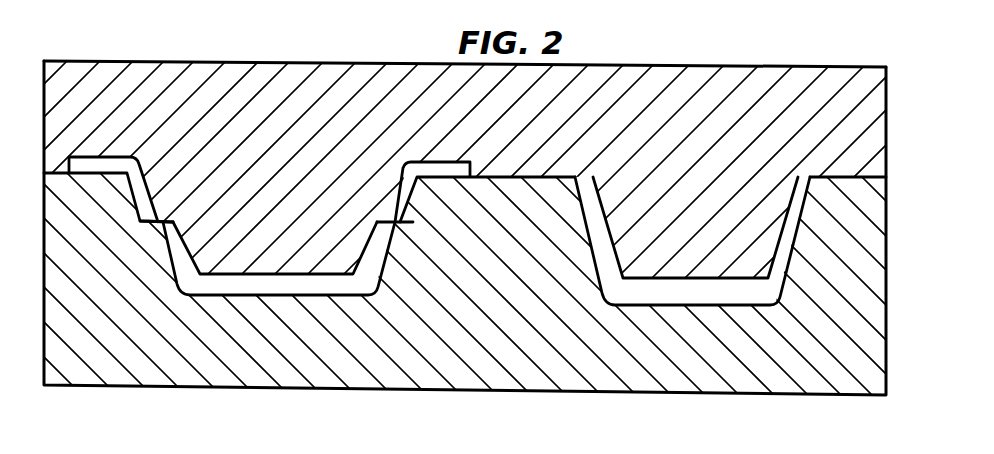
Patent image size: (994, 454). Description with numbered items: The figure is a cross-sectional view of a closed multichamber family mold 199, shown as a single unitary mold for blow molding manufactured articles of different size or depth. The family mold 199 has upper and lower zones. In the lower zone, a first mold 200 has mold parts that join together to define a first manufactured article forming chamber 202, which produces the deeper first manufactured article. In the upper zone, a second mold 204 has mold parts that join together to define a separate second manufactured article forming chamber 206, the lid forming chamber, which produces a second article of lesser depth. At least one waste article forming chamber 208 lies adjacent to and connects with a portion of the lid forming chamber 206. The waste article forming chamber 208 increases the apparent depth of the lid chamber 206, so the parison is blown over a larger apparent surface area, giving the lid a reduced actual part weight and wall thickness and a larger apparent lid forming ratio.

The family mold 199 is at (347, 30).
The first mold 200 is at (812, 71).
The first manufactured article forming chamber 202 is at (771, 292).
The second mold 204 is at (101, 84).
The second manufactured article forming chamber 206 is at (222, 287).
The waste article forming chamber 208 is at (104, 158).